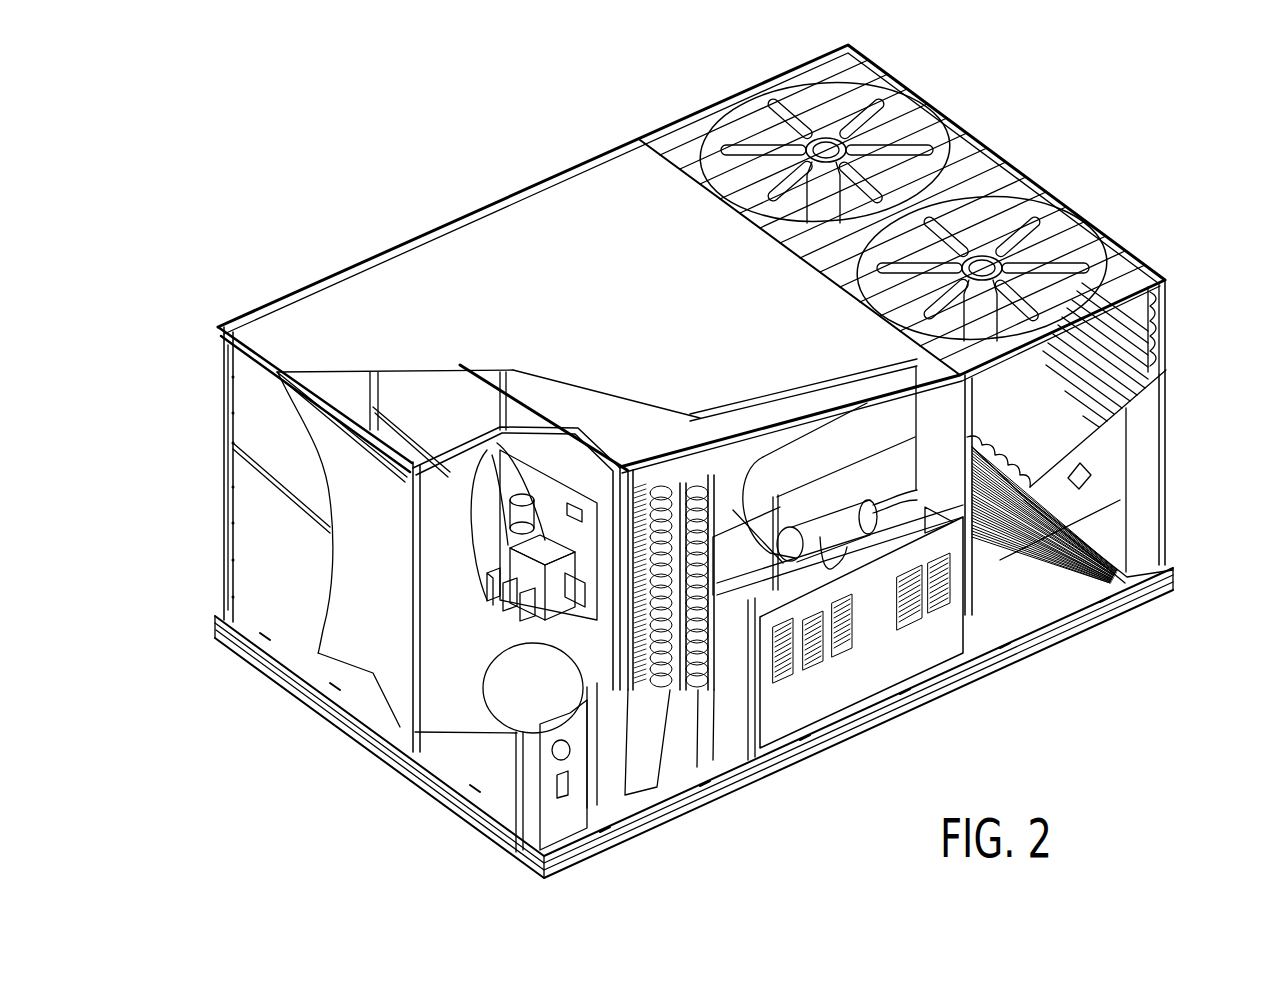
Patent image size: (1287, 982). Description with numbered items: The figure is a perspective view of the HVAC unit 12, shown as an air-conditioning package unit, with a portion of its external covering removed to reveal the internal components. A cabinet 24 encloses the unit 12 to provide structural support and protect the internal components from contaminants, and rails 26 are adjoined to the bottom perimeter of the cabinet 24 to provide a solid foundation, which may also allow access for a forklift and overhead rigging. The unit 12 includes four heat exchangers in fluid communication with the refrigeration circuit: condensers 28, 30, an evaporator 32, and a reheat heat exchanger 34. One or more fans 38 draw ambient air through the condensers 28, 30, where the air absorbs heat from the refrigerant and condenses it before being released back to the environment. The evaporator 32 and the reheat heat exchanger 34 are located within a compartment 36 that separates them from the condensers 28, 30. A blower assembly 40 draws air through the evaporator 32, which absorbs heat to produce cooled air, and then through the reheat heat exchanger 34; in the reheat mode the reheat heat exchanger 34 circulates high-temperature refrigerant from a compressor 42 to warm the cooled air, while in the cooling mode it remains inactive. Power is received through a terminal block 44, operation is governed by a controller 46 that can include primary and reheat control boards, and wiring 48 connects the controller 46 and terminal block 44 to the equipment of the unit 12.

The HVAC unit 12 is at (404, 150).
The cabinet 24 is at (262, 589).
The rails 26 is at (289, 684).
The condenser 28 is at (1170, 350).
The condenser 30 is at (1012, 462).
The evaporator 32 is at (658, 762).
The reheat heat exchanger 34 is at (701, 777).
The compartment 36 is at (733, 495).
The fans 38 is at (800, 128).
The blower assembly 40 is at (877, 483).
The compressor 42 is at (593, 687).
The terminal block 44 is at (512, 558).
The controller 46 is at (547, 520).
The wiring 48 is at (688, 462).